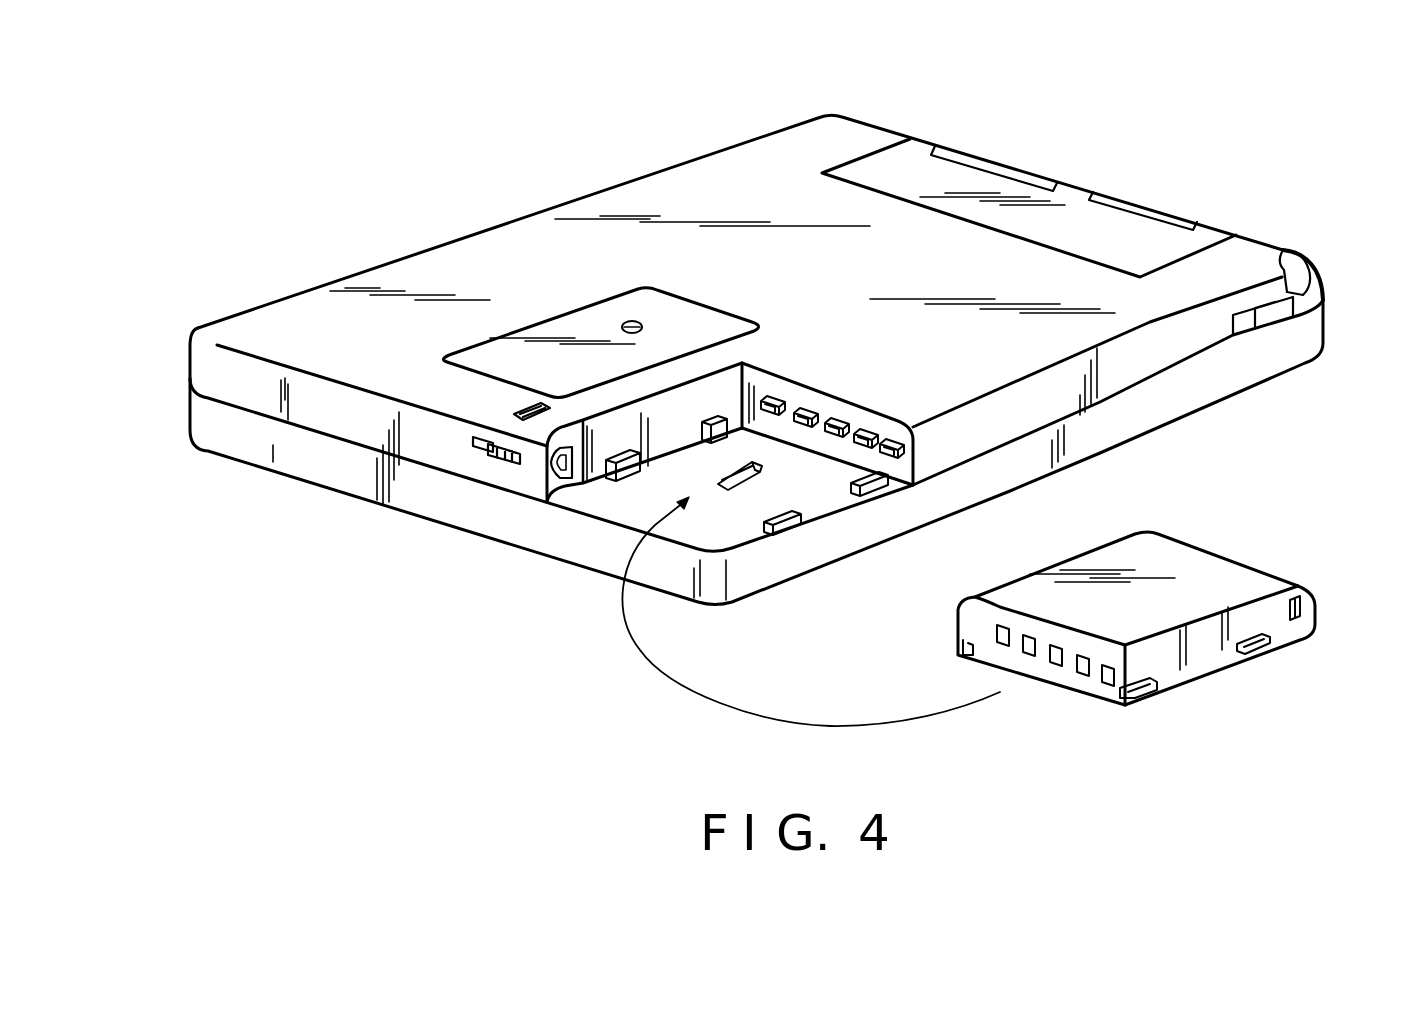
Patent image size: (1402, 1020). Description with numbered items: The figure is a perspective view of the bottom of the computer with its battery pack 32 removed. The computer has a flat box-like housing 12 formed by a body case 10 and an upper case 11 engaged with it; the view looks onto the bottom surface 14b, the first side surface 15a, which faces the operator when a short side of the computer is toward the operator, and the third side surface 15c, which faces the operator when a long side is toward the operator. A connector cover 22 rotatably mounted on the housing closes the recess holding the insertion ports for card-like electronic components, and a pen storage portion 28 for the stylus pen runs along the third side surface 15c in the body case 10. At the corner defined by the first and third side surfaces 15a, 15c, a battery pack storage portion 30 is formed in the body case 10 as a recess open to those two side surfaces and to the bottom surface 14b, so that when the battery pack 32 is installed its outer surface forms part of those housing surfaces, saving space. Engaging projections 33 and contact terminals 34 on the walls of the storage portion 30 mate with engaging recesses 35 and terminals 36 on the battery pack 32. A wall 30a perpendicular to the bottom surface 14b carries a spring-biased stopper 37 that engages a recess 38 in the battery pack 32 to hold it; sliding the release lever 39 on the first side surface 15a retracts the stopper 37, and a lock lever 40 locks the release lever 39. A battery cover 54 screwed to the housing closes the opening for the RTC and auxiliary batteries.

The body case 10 is at (190, 377).
The upper case 11 is at (117, 370).
The housing 12 is at (695, 359).
The bottom surface 14b is at (373, 281).
The first side surface 15a is at (350, 473).
The third side surface 15c is at (1085, 443).
The connector cover 22 is at (1054, 194).
The pen storage portion 28 is at (1322, 292).
The battery pack storage portion 30 is at (627, 505).
The wall 30a is at (577, 486).
The battery pack 32 is at (1227, 570).
The engaging projections 33 is at (612, 452).
The contact terminals 34 is at (777, 400).
The engaging recesses 35 is at (963, 652).
The terminals 36 is at (1033, 655).
The stopper 37 is at (545, 478).
The recess 38 is at (1305, 604).
The release lever 39 is at (500, 462).
The lock lever 40 is at (497, 405).
The battery cover 54 is at (578, 320).